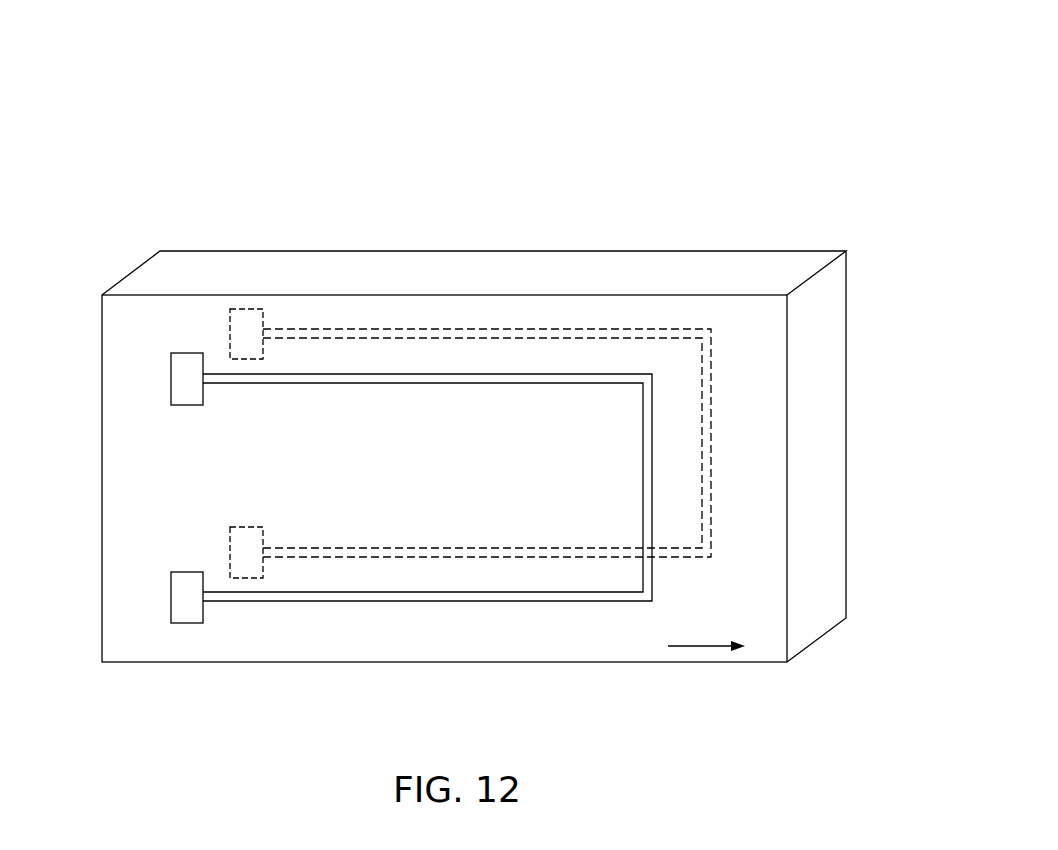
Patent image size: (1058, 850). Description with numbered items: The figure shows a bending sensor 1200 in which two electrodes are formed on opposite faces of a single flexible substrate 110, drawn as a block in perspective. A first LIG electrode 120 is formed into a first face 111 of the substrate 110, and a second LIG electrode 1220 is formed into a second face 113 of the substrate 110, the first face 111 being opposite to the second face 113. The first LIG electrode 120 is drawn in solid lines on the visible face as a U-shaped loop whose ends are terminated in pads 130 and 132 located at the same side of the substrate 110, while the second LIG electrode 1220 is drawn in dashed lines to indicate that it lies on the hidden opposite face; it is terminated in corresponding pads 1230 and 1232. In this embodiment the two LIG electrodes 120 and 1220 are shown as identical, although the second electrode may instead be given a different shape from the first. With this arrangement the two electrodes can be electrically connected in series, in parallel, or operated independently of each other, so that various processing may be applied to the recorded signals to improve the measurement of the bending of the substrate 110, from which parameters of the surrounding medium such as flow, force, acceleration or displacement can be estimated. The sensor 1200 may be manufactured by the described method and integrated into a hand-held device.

The sensor 1200 is at (800, 50).
The flexible substrate 110 is at (830, 382).
The first face 111 is at (745, 318).
The second face 113 is at (860, 301).
The first LIG electrode 120 is at (353, 601).
The pad 130 is at (171, 379).
The pad 132 is at (171, 597).
The second LIG electrode 1220 is at (549, 329).
The third port 1230 is at (237, 309).
The fourth port 1232 is at (230, 552).